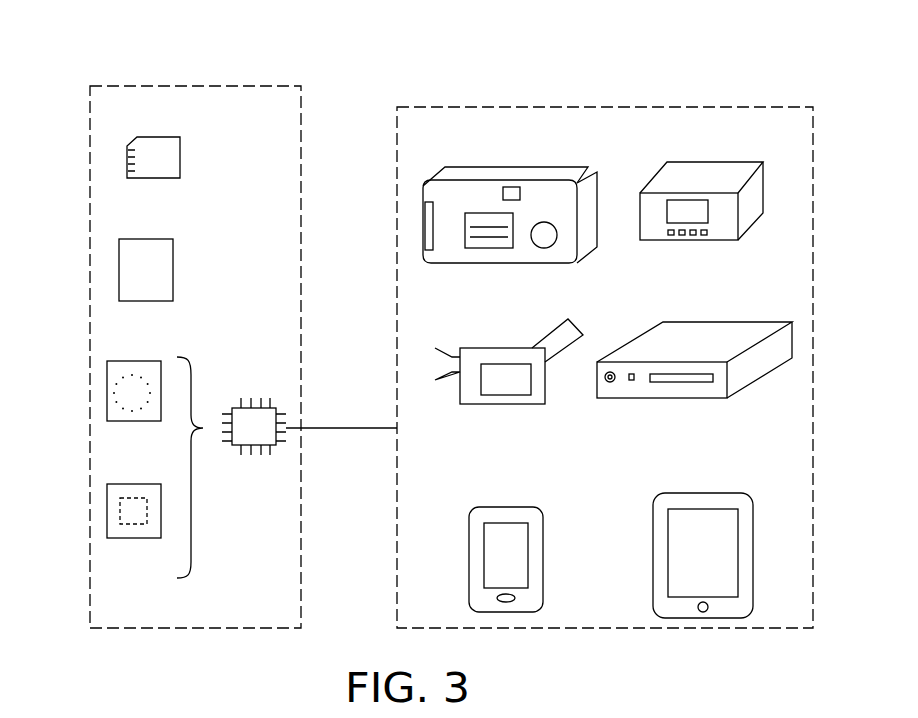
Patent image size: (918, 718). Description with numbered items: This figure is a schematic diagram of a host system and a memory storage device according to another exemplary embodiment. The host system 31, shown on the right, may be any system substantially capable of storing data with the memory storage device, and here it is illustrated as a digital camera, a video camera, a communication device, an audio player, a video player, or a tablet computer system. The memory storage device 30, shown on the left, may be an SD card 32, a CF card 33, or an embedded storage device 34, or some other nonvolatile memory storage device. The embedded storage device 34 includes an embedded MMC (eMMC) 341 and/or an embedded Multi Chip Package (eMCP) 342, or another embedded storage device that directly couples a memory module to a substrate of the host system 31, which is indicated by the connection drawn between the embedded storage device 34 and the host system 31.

The memory storage device 30 is at (184, 85).
The host system 31 is at (540, 107).
The SD card 32 is at (127, 161).
The CF card 33 is at (119, 273).
The embedded storage device 34 is at (255, 398).
The embedded MMC (eMMC) 341 is at (107, 394).
The embedded Multi Chip Package (eMCP) 342 is at (107, 514).